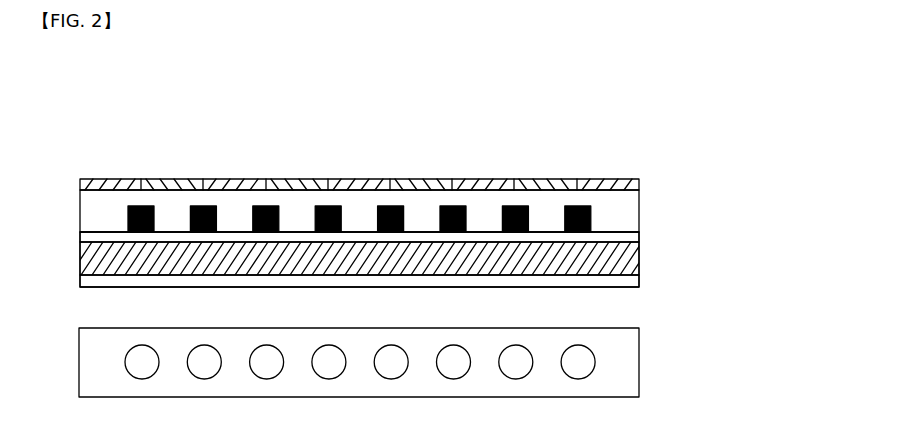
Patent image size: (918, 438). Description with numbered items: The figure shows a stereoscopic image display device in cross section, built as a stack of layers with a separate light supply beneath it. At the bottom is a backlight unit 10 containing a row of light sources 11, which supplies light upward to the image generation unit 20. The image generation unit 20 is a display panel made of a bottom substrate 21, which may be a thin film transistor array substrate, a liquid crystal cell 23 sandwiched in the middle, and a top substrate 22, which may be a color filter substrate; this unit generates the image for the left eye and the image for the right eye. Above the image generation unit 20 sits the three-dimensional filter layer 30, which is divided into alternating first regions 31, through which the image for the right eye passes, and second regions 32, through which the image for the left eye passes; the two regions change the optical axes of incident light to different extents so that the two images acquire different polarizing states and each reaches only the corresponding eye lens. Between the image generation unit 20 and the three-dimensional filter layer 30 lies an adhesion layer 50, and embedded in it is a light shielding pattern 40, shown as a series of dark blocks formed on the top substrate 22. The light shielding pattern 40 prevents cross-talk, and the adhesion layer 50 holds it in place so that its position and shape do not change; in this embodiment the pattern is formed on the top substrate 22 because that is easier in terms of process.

The backlight unit 10 is at (630, 346).
The light source 11 is at (578, 363).
The image generation unit 20 is at (785, 205).
The bottom substrate 21 is at (637, 282).
The top substrate 22 is at (637, 242).
The liquid crystal cell 23 is at (637, 257).
The 3D filter layer 30 is at (643, 178).
The first region 31 is at (223, 182).
The second region 32 is at (427, 185).
The light shielding pattern 40 is at (127, 225).
The adhesion layer 50 is at (637, 210).